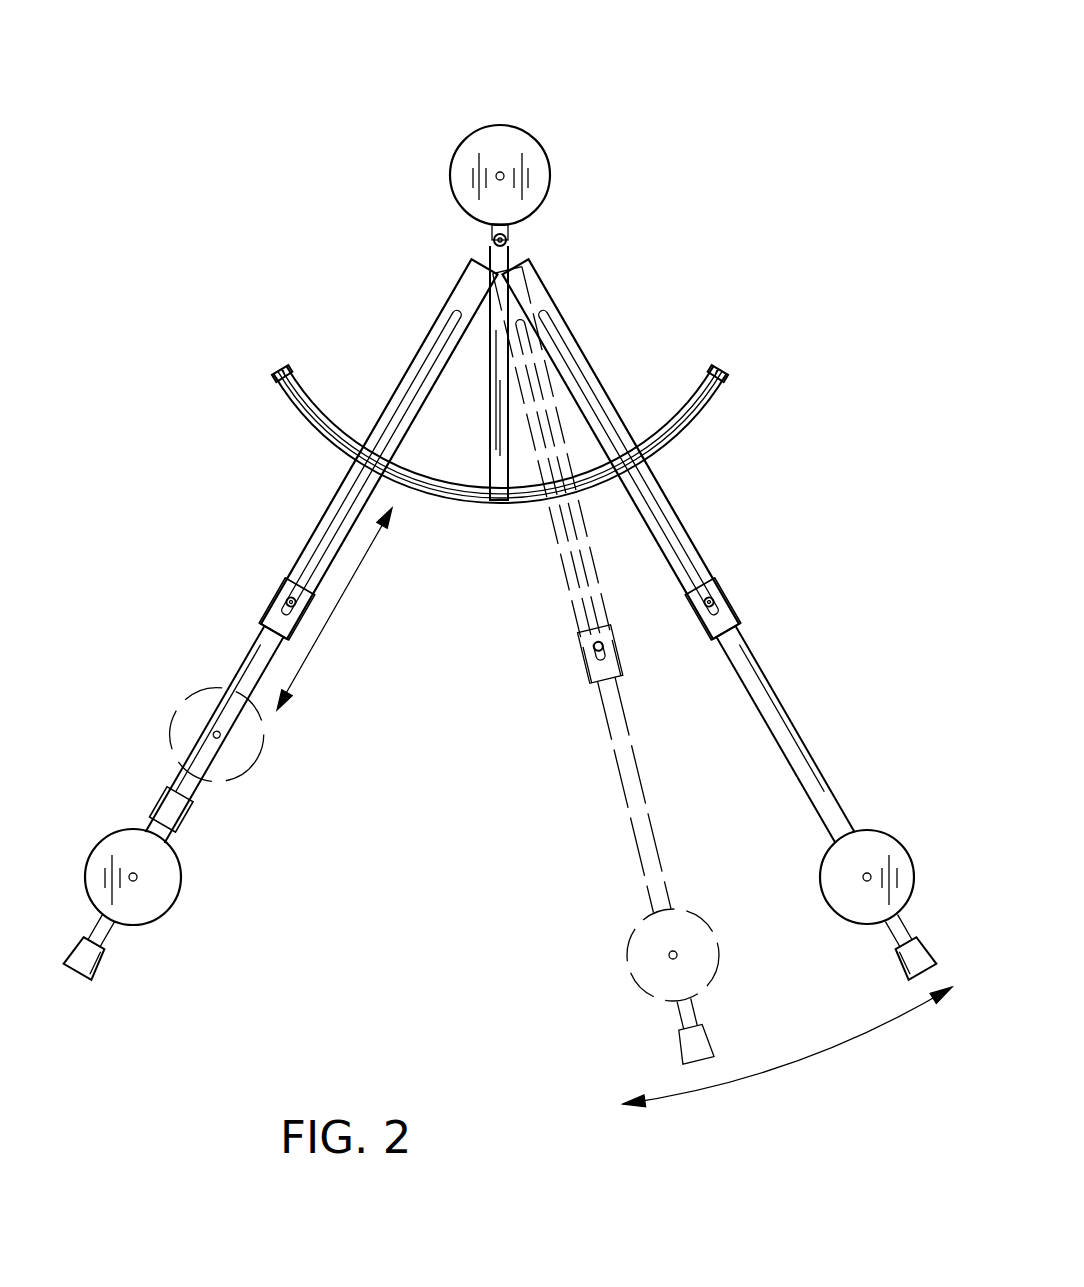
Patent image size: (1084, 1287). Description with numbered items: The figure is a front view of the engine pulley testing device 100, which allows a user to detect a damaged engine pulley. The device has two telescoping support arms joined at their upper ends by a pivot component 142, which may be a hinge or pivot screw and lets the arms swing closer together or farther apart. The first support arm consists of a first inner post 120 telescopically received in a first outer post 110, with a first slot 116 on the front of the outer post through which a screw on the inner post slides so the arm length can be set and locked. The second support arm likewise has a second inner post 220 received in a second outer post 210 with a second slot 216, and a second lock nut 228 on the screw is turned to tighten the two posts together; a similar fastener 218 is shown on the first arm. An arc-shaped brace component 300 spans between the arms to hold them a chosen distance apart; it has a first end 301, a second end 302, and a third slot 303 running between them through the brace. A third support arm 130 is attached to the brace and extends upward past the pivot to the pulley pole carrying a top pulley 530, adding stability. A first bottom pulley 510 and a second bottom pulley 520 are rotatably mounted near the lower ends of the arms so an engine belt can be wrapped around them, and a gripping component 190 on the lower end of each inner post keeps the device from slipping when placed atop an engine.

The engine pulley testing device 100 is at (832, 192).
The first outer post 110 is at (450, 312).
The first slot 116 is at (405, 398).
The first inner post 120 is at (244, 666).
The third support arm 130 is at (490, 455).
The pivot component 142 is at (510, 238).
The gripping component 190 is at (102, 978).
The second outer post 210 is at (540, 298).
The second slot 216 is at (578, 364).
The first arm fastener 218 is at (285, 600).
The second inner post 220 is at (786, 722).
The second lock nut 228 is at (716, 594).
The arc-shaped brace component 300 is at (520, 500).
The first end of brace component 301 is at (281, 376).
The second end of brace component 302 is at (728, 372).
The third slot 303 is at (688, 415).
The first bottom pulley 510 is at (178, 905).
The second bottom pulley 520 is at (876, 831).
The top pulley 530 is at (520, 133).